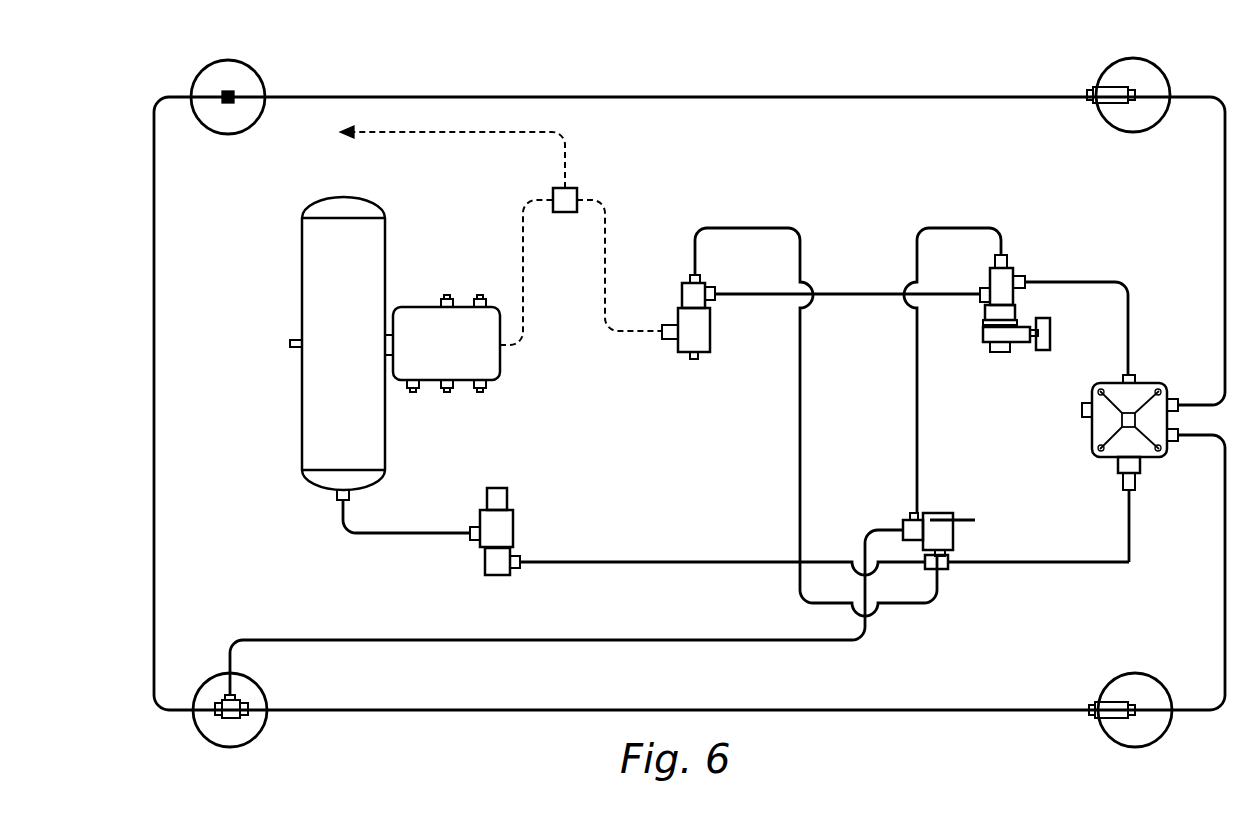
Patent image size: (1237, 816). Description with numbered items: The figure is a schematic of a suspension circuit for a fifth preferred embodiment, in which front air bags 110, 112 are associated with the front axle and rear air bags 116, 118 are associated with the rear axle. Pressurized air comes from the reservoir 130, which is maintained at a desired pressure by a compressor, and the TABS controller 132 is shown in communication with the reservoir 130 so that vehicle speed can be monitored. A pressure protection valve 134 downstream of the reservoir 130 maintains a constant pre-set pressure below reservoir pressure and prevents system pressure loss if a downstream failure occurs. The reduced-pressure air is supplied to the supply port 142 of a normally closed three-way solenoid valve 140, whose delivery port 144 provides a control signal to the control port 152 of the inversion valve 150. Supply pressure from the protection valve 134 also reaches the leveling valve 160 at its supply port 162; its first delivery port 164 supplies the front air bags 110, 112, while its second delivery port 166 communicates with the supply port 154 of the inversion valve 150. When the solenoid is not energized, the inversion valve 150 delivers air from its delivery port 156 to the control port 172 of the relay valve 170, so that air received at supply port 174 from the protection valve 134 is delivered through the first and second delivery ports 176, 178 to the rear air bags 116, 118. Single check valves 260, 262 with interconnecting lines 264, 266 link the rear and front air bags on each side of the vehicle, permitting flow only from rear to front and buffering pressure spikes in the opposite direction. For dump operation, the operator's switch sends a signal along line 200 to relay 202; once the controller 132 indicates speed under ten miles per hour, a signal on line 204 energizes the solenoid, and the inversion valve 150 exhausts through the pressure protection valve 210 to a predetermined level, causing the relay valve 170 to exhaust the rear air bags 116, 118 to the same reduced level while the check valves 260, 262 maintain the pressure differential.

The front air bag 110 is at (250, 84).
The front air bag 112 is at (245, 728).
The rear air bag 116 is at (1155, 80).
The rear air bag 118 is at (1155, 728).
The reservoir 130 is at (367, 270).
The TABS controller 132 is at (455, 377).
The pressure protection valve 134 is at (503, 530).
The three-way solenoid valve 140 is at (692, 330).
The supply port 142 is at (700, 283).
The delivery port 144 is at (715, 298).
The inversion valve 150 is at (1019, 304).
The control port 152 is at (988, 300).
The supply port 154 is at (996, 262).
The delivery port 156 is at (1027, 280).
The leveling valve 160 is at (942, 542).
The supply port 162 is at (942, 570).
The first delivery port 164 is at (863, 495).
The second delivery port 166 is at (913, 513).
The relay valve 170 is at (1135, 405).
The control port 172 is at (1125, 378).
The supply port 174 is at (1135, 488).
The first delivery port 176 is at (1178, 400).
The second delivery port 178 is at (1178, 441).
The line 200 is at (568, 168).
The relay 202 is at (553, 195).
The line 204 is at (605, 302).
The pressure protection valve 210 is at (1022, 352).
The single check valve 260 is at (1090, 104).
The single check valve 262 is at (1092, 719).
The interconnecting line 264 is at (880, 93).
The interconnecting line 266 is at (893, 712).